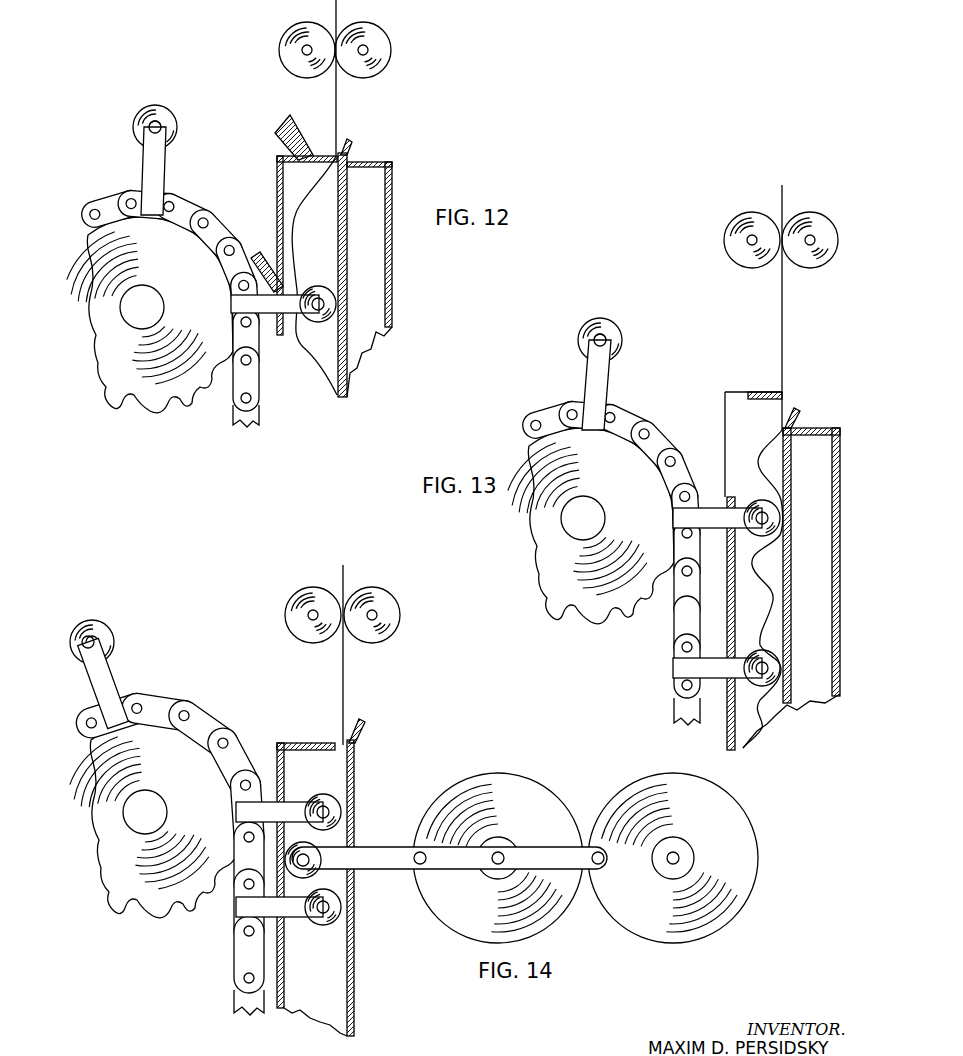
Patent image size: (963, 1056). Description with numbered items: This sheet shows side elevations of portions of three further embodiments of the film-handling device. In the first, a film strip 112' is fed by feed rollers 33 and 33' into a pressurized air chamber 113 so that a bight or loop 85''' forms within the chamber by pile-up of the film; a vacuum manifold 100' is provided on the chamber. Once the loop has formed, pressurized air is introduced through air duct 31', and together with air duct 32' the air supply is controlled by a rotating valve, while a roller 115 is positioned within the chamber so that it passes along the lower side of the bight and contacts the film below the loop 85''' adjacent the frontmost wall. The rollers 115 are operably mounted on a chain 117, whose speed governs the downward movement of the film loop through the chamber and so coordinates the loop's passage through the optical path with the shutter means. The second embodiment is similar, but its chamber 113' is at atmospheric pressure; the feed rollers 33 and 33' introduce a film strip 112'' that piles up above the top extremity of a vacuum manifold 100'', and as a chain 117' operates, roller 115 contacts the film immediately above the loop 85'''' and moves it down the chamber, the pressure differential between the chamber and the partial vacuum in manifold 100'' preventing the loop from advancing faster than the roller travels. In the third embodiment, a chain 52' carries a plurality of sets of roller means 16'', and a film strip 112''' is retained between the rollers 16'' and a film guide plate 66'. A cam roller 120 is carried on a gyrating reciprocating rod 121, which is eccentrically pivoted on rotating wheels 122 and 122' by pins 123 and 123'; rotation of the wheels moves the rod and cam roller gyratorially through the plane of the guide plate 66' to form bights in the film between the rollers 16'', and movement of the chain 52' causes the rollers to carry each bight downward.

In FIG. 12, the feed roller 33 is at (377, 49).
In FIG. 13, the feed roller 33 is at (818, 232).
In FIG. 12, the feed roller 33' is at (289, 49).
In FIG. 13, the feed roller 33' is at (734, 239).
In FIG. 12, the film strip 112' is at (362, 78).
In FIG. 13, the film strip 112'' is at (751, 307).
In FIG. 14, the film strip 112''' is at (376, 655).
In FIG. 12, the air duct 31' is at (274, 137).
In FIG. 12, the air duct 32' is at (262, 262).
In FIG. 12, the pressurized air chamber 113 is at (284, 245).
In FIG. 13, the chamber 113' is at (731, 571).
In FIG. 12, the bight or loop 85''' is at (285, 275).
In FIG. 13, the film loop 85'''' is at (757, 589).
In FIG. 12, the roller 115 is at (318, 323).
In FIG. 13, the roller 115 is at (620, 334).
In FIG. 12, the chain 117 is at (193, 307).
In FIG. 13, the chain 117' is at (611, 553).
In FIG. 12, the vacuum manifold 100' is at (384, 268).
In FIG. 13, the vacuum manifold 100'' is at (801, 578).
In FIG. 14, the roller means 16'' is at (115, 674).
In FIG. 14, the chain 52' is at (169, 852).
In FIG. 14, the film guide plate 66' is at (340, 877).
In FIG. 14, the cam roller 120 is at (318, 847).
In FIG. 14, the gyrating reciprocating rod 121 is at (367, 862).
In FIG. 14, the rotating wheel 122 is at (498, 858).
In FIG. 14, the rotating wheel 122' is at (684, 858).
In FIG. 14, the pin 123 is at (540, 902).
In FIG. 14, the pin 123' is at (734, 870).